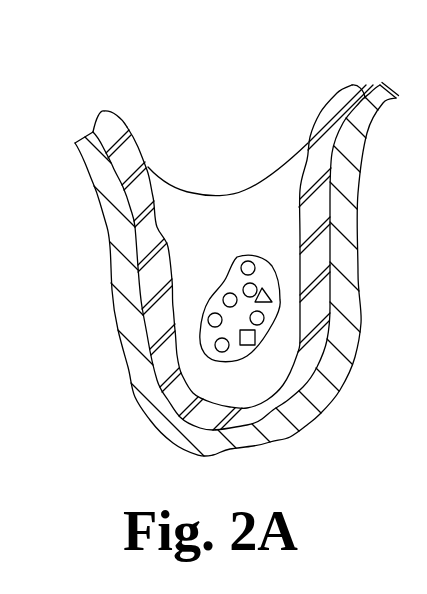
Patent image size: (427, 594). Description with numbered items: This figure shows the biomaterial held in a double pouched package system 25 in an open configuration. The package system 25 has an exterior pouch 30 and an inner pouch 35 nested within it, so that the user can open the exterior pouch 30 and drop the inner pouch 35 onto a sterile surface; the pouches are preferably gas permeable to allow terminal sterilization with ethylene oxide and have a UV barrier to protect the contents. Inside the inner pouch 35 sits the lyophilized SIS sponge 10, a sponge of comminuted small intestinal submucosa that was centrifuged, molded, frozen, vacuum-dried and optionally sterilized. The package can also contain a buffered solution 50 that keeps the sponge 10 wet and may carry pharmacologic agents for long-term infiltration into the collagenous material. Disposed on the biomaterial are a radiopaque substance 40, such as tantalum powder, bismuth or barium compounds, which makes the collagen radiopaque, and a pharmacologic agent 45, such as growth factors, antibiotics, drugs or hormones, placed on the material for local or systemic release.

The double pouched package system 25 is at (108, 102).
The exterior pouch 30 is at (110, 213).
The inner pouch 35 is at (142, 242).
The buffered solution 50 is at (270, 218).
The SIS sponge 10 is at (203, 322).
The radiopaque substance 40 is at (270, 295).
The pharmacologic agent 45 is at (250, 343).